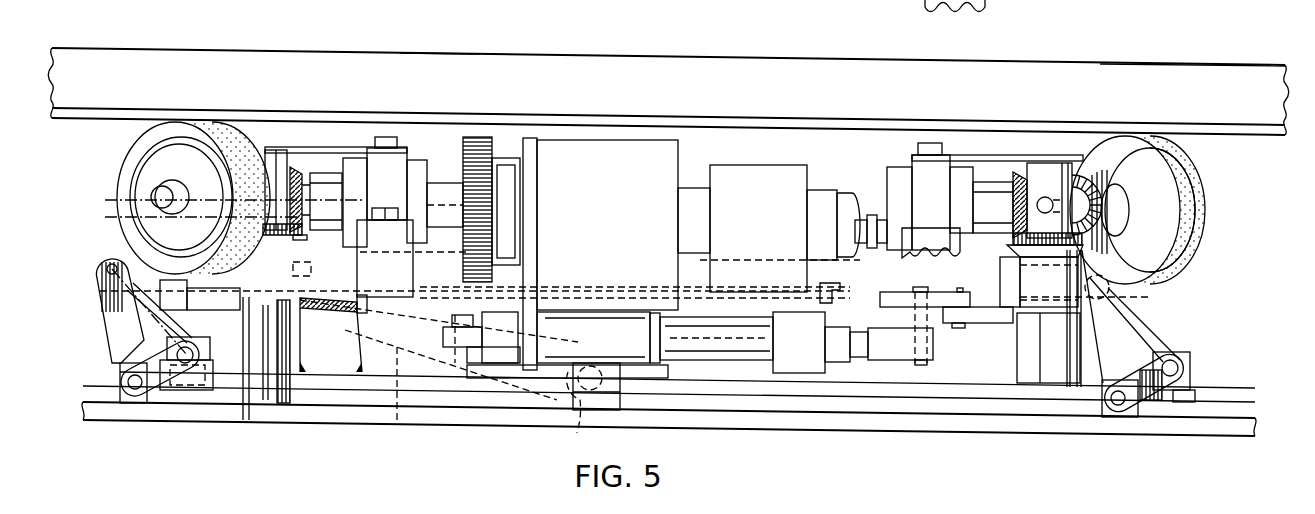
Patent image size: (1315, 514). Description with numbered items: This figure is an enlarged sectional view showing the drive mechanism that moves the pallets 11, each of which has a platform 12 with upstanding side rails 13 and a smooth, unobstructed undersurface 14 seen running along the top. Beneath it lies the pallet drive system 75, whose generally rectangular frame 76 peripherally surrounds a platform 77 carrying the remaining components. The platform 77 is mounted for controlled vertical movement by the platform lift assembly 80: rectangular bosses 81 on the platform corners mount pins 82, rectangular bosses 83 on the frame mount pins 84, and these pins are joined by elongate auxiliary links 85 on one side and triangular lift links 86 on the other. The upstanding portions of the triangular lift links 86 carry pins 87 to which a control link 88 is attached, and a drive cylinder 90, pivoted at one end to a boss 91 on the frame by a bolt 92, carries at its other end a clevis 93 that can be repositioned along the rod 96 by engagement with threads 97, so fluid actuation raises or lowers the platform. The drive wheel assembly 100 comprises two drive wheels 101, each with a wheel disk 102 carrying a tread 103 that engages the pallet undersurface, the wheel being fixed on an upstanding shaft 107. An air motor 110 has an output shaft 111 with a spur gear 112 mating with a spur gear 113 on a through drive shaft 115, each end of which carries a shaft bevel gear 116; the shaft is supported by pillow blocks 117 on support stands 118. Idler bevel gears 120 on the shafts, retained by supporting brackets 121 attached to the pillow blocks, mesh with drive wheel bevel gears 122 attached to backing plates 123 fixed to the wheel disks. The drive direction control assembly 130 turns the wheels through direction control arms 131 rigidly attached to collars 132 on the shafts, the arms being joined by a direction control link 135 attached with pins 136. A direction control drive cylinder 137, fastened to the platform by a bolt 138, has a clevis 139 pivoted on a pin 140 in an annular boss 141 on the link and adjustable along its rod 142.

The movable pallet 11 is at (175, 48).
The platform 12 is at (1283, 136).
The upstanding side rails 13 is at (1144, 73).
The undersurface 14 is at (788, 136).
The pallet drive system 75 is at (445, 82).
The frame 76 is at (1217, 434).
The platform 77 is at (773, 387).
The platform lift assembly 80 is at (635, 357).
The rectangular bosses 81 is at (197, 343).
The pins 82 is at (190, 355).
The rectangular bosses 83 is at (118, 397).
The pins 84 is at (135, 389).
The auxiliary links 85 is at (167, 387).
The triangular lift links 86 is at (110, 319).
The pins 87 is at (108, 265).
The control link 88 is at (975, 310).
The drive cylinder 90 is at (399, 398).
The boss 91 is at (612, 407).
The bolt 92 is at (580, 415).
The clevis 93 is at (297, 267).
The rod 96 is at (347, 310).
The threads 97 is at (323, 303).
The drive wheel assembly 100 is at (661, 203).
The drive wheels 101 is at (127, 148).
The wheel disk 102 is at (143, 187).
The tread 103 is at (1165, 211).
The upstanding shaft 107 is at (270, 163).
The air motor 110 is at (597, 148).
The output shaft 111 is at (524, 231).
The spur gear 112 is at (485, 207).
The spur gear 113 is at (487, 135).
The through drive shaft 115 is at (442, 202).
The shaft bevel gear 116 is at (327, 180).
The pillow blocks 117 is at (378, 170).
The support stands 118 is at (400, 267).
The idler bevel gears 120 is at (291, 234).
The supporting brackets 121 is at (293, 147).
The drive wheel bevel gears 122 is at (1086, 167).
The drive wheel backing plates 123 is at (1133, 184).
The drive direction control assembly 130 is at (745, 365).
The direction control arms 131 is at (247, 418).
The collars 132 is at (268, 347).
The direction control link 135 is at (361, 323).
The pins 136 is at (173, 305).
The direction control drive cylinder 137 is at (708, 348).
The bolt 138 is at (465, 317).
The clevis 139 is at (892, 357).
The pin 140 is at (918, 363).
The annular boss 141 is at (920, 318).
The rod 142 is at (868, 341).